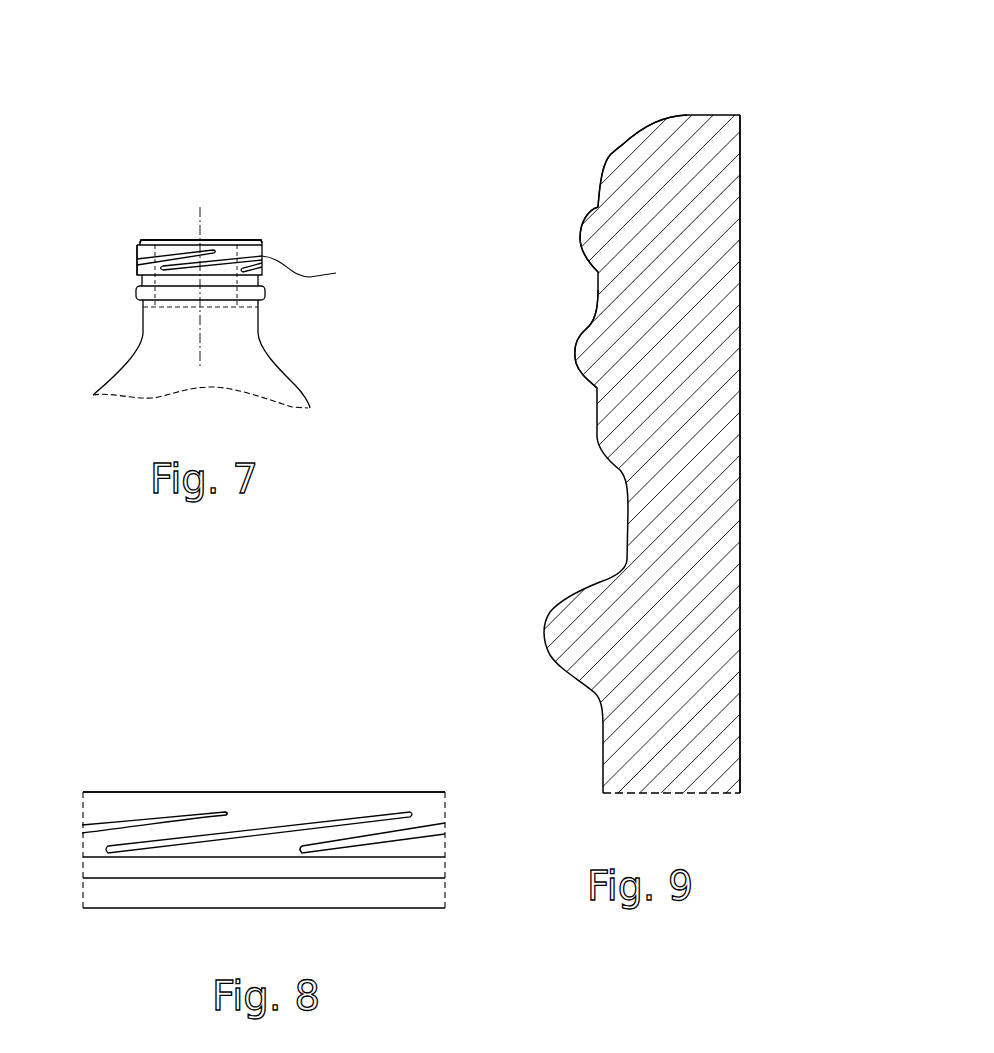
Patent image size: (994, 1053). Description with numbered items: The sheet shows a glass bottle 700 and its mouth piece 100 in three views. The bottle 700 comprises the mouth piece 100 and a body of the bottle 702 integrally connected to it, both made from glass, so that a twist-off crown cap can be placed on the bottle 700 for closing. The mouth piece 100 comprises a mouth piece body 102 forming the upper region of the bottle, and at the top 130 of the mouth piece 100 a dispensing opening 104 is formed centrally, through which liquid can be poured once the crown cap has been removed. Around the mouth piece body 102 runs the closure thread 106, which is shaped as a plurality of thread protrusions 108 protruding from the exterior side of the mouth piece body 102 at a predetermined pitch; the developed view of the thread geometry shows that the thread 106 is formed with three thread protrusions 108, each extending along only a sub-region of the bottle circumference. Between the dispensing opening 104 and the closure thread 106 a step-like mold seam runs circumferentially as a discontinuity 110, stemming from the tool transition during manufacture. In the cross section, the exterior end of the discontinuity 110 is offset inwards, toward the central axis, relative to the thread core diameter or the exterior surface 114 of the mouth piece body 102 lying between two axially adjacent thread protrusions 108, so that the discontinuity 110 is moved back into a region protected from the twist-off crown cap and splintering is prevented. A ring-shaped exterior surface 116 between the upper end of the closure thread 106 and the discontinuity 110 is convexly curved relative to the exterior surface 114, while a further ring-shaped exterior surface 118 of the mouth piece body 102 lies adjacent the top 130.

In FIG. 9, the mouth piece 100 is at (614, 80).
In FIG. 7, the mouth piece body 102 is at (121, 237).
In FIG. 8, the mouth piece body 102 is at (66, 792).
In FIG. 9, the mouth piece body 102 is at (769, 115).
In FIG. 7, the dispensing opening 104 is at (214, 226).
In FIG. 8, the dispensing opening 104 is at (258, 785).
In FIG. 9, the dispensing opening 104 is at (805, 100).
In FIG. 7, the closure thread 106 is at (150, 274).
In FIG. 8, the closure thread 106 is at (258, 832).
In FIG. 9, the closure thread 106 is at (595, 210).
In FIG. 7, the thread protrusions 108 is at (321, 270).
In FIG. 8, the thread protrusions 108 is at (140, 815).
In FIG. 7, the discontinuity 110 is at (136, 232).
In FIG. 9, the discontinuity 110 is at (616, 141).
In FIG. 7, the exterior surface of the mouth piece body 114 is at (138, 258).
In FIG. 9, the exterior surface of the mouth piece body 114 is at (598, 292).
In FIG. 9, the ring-shaped exterior surface 116 is at (610, 157).
In FIG. 7, the ring-shaped exterior surface 118 is at (201, 241).
In FIG. 9, the ring-shaped exterior surface 118 is at (637, 127).
In FIG. 7, the top 130 is at (172, 240).
In FIG. 7, the glass bottle 700 is at (223, 246).
In FIG. 7, the body of the bottle 702 is at (314, 308).